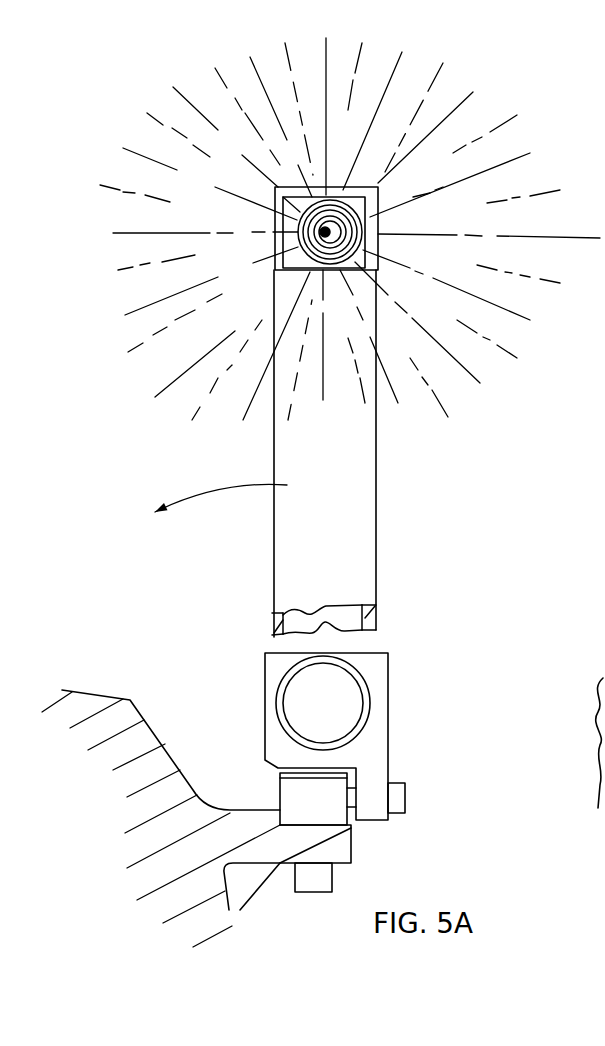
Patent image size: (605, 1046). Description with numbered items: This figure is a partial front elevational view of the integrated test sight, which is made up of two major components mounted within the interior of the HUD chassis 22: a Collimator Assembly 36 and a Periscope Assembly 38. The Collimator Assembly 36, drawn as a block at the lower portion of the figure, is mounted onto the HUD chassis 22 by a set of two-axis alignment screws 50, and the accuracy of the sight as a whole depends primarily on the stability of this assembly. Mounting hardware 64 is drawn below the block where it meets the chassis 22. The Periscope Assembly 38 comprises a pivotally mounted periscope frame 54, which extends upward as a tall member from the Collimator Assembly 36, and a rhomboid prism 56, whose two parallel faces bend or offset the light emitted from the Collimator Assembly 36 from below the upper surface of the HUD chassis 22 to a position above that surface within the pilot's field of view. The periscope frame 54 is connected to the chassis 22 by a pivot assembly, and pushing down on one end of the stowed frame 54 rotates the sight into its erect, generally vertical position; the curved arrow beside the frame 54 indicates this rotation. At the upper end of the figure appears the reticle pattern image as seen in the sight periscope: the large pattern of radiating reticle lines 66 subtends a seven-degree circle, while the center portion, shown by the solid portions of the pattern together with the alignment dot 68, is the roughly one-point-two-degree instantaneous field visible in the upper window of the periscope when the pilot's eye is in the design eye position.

The HUD chassis 22 is at (132, 732).
The Collimator Assembly 36 is at (408, 670).
The Periscope Assembly 38 is at (416, 472).
The two-axis alignment screws 50 is at (405, 801).
The periscope frame 54 is at (362, 454).
The rhomboid prism 56 is at (350, 617).
The mounting plate 64 is at (352, 862).
The radiating reticle lines 66 is at (145, 386).
The alignment dot 68 is at (325, 232).